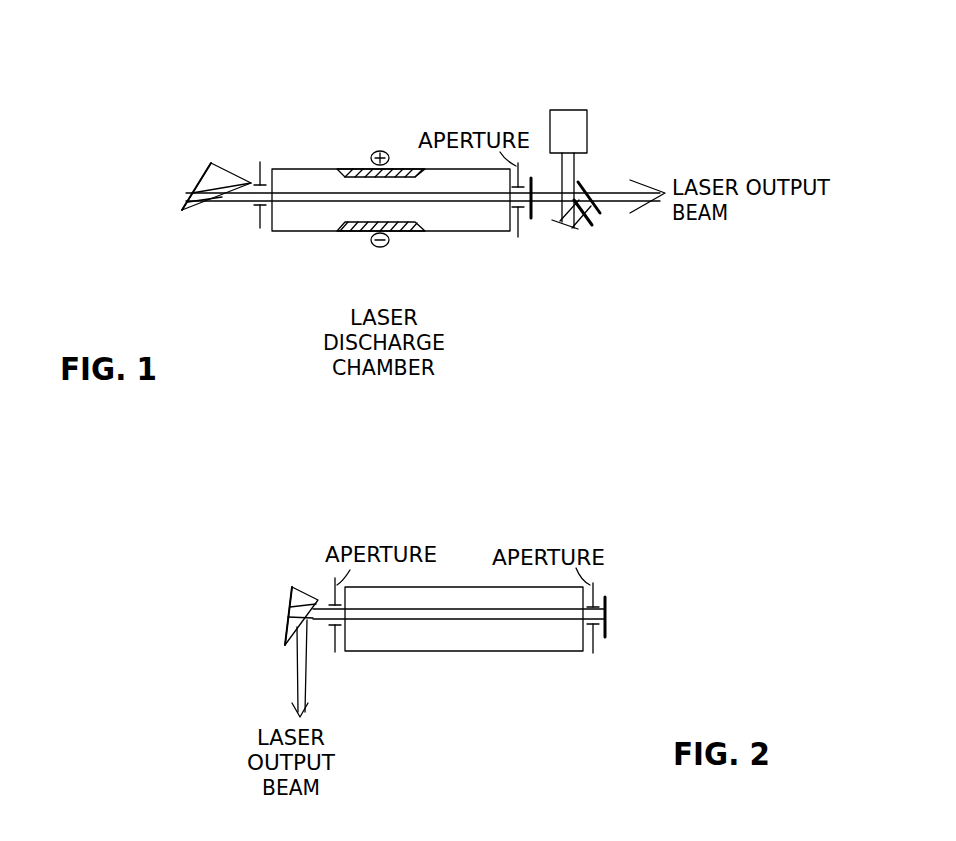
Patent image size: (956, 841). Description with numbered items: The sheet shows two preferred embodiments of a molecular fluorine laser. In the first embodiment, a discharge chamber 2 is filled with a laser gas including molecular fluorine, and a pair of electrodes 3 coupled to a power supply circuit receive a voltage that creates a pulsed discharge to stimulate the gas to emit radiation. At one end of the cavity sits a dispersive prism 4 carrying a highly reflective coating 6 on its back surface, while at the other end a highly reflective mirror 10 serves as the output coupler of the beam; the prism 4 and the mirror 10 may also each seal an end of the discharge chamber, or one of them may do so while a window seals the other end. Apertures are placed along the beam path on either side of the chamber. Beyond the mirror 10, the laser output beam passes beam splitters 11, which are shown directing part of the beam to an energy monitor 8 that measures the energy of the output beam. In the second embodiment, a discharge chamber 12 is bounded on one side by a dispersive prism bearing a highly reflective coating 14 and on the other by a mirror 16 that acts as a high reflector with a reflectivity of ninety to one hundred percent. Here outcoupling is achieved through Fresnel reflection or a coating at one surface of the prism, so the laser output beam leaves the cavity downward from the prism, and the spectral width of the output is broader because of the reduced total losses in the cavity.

In FIG. 1, the discharge chamber 2 is at (260, 228).
In FIG. 1, the electrodes 3 is at (353, 168).
In FIG. 1, the dispersive prism 4 is at (197, 208).
In FIG. 1, the highly reflective coating 6 is at (203, 183).
In FIG. 1, the energy monitor 8 is at (563, 110).
In FIG. 1, the highly reflective mirror 10 is at (534, 220).
In FIG. 1, the beam splitters 11 is at (590, 238).
In FIG. 2, the discharge chamber 12 is at (476, 652).
In FIG. 2, the highly reflective coating 14 is at (290, 608).
In FIG. 2, the highly reflective mirror 16 is at (608, 612).